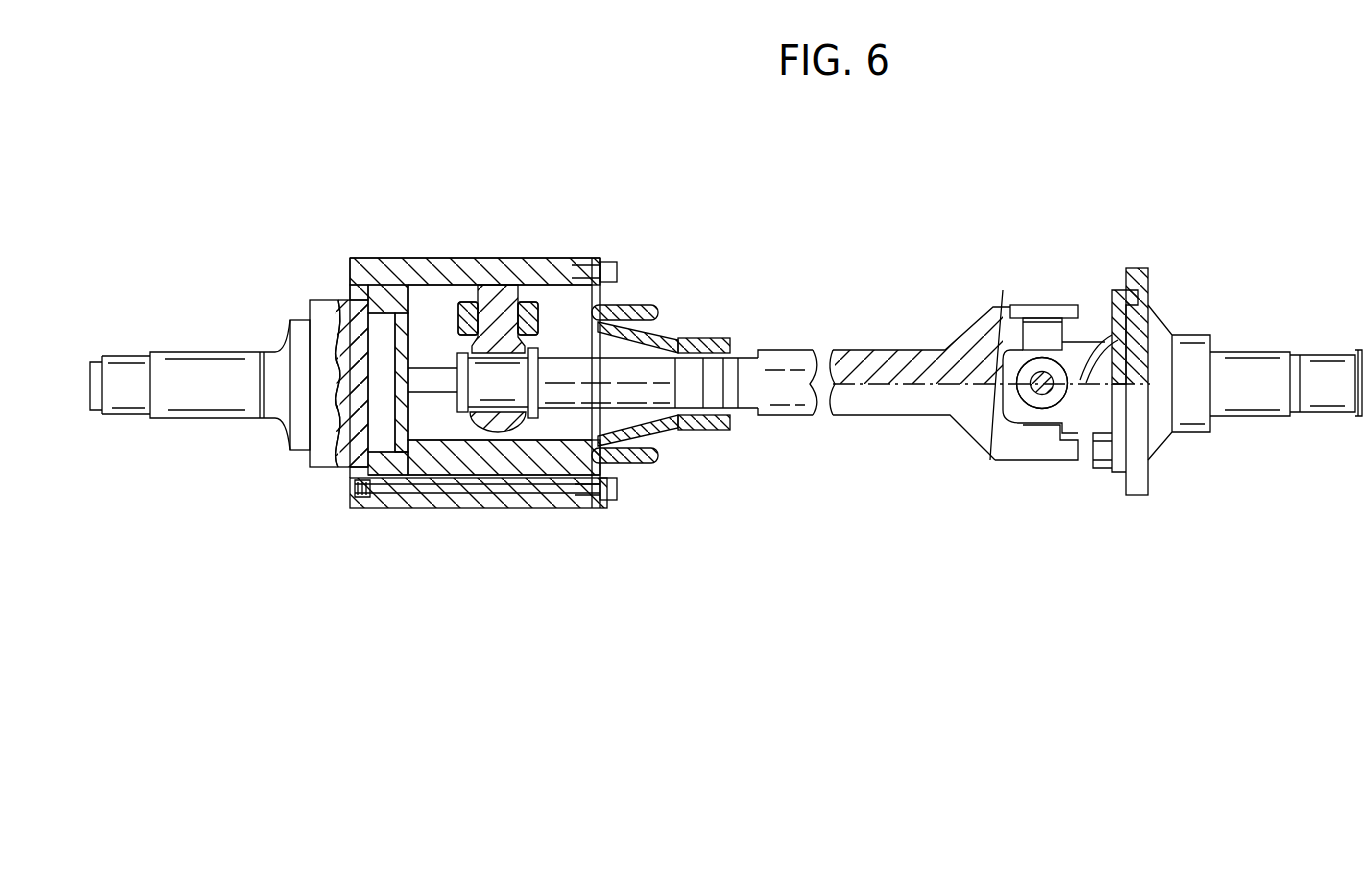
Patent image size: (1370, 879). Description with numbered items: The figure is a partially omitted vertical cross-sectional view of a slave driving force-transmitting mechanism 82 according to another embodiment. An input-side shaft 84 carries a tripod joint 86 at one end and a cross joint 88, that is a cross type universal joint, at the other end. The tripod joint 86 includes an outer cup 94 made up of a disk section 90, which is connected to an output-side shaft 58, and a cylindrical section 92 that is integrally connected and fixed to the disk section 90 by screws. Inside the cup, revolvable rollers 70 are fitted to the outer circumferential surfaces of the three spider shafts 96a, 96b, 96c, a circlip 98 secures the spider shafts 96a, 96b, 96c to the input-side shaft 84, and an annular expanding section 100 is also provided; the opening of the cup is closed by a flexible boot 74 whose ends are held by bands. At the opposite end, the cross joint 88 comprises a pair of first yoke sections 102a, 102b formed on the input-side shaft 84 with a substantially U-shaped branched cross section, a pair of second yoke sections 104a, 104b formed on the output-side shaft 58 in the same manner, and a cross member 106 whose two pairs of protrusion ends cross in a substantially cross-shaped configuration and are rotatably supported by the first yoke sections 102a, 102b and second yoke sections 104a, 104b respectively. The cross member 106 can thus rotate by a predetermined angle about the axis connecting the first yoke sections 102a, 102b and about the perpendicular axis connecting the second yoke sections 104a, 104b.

The output-side shaft 58 is at (203, 362).
The revolvable roller 70 is at (545, 300).
The flexible boot 74 is at (677, 338).
The slave driving force-transmitting mechanism 82 is at (1120, 168).
The input-side shaft 84 is at (783, 360).
The tripod joint 86 is at (483, 336).
The cross joint 88 is at (1169, 282).
The disk section 90 is at (345, 300).
The cylindrical section 92 is at (446, 262).
The outer cup 94 is at (419, 521).
The spider shaft 96a is at (584, 219).
The spider shaft 96b is at (468, 318).
The spider shaft 96c is at (500, 297).
The circlip 98 is at (462, 415).
The annular expanding section 100 is at (533, 420).
The first yoke section 102a is at (1077, 305).
The first yoke section 102b is at (1043, 448).
The second yoke section 104a is at (986, 469).
The second yoke section 104b is at (1018, 405).
The cross member 106 is at (1012, 332).